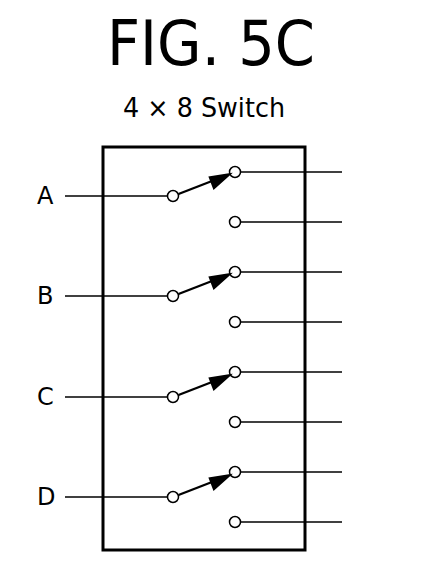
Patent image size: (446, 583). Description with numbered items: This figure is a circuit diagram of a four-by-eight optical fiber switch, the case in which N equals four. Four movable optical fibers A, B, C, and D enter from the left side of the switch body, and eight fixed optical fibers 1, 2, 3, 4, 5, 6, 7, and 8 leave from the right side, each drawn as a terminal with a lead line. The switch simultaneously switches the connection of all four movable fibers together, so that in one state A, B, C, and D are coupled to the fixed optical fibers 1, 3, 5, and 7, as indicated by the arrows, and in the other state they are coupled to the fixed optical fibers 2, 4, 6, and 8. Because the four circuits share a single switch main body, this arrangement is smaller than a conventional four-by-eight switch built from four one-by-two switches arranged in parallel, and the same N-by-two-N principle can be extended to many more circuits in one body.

The fixed optical fiber 1 is at (299, 172).
The fixed optical fiber 2 is at (299, 222).
The fixed optical fiber 3 is at (299, 272).
The fixed optical fiber 4 is at (299, 322).
The fixed optical fiber 5 is at (299, 372).
The fixed optical fiber 6 is at (299, 422).
The fixed optical fiber 7 is at (299, 472).
The fixed optical fiber 8 is at (299, 522).